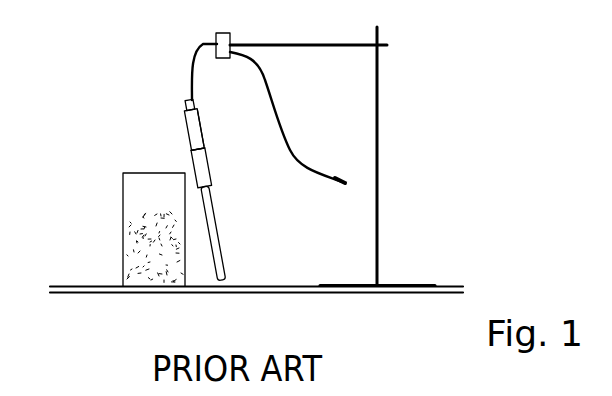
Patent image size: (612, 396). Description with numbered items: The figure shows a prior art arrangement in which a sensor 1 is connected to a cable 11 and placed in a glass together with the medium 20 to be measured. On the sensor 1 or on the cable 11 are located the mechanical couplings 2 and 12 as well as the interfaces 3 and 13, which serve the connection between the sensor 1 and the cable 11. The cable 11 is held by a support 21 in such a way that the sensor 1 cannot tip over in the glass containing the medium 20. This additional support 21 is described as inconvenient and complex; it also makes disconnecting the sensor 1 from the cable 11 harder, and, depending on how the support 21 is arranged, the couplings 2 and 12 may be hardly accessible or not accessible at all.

The sensor 1 is at (153, 172).
The cable 11 is at (183, 99).
The interface 3 is at (180, 128).
The mechanical coupling 2 is at (197, 133).
The interface 13 is at (175, 148).
The mechanical coupling 12 is at (236, 168).
The medium 20 is at (175, 268).
The support 21 is at (377, 200).